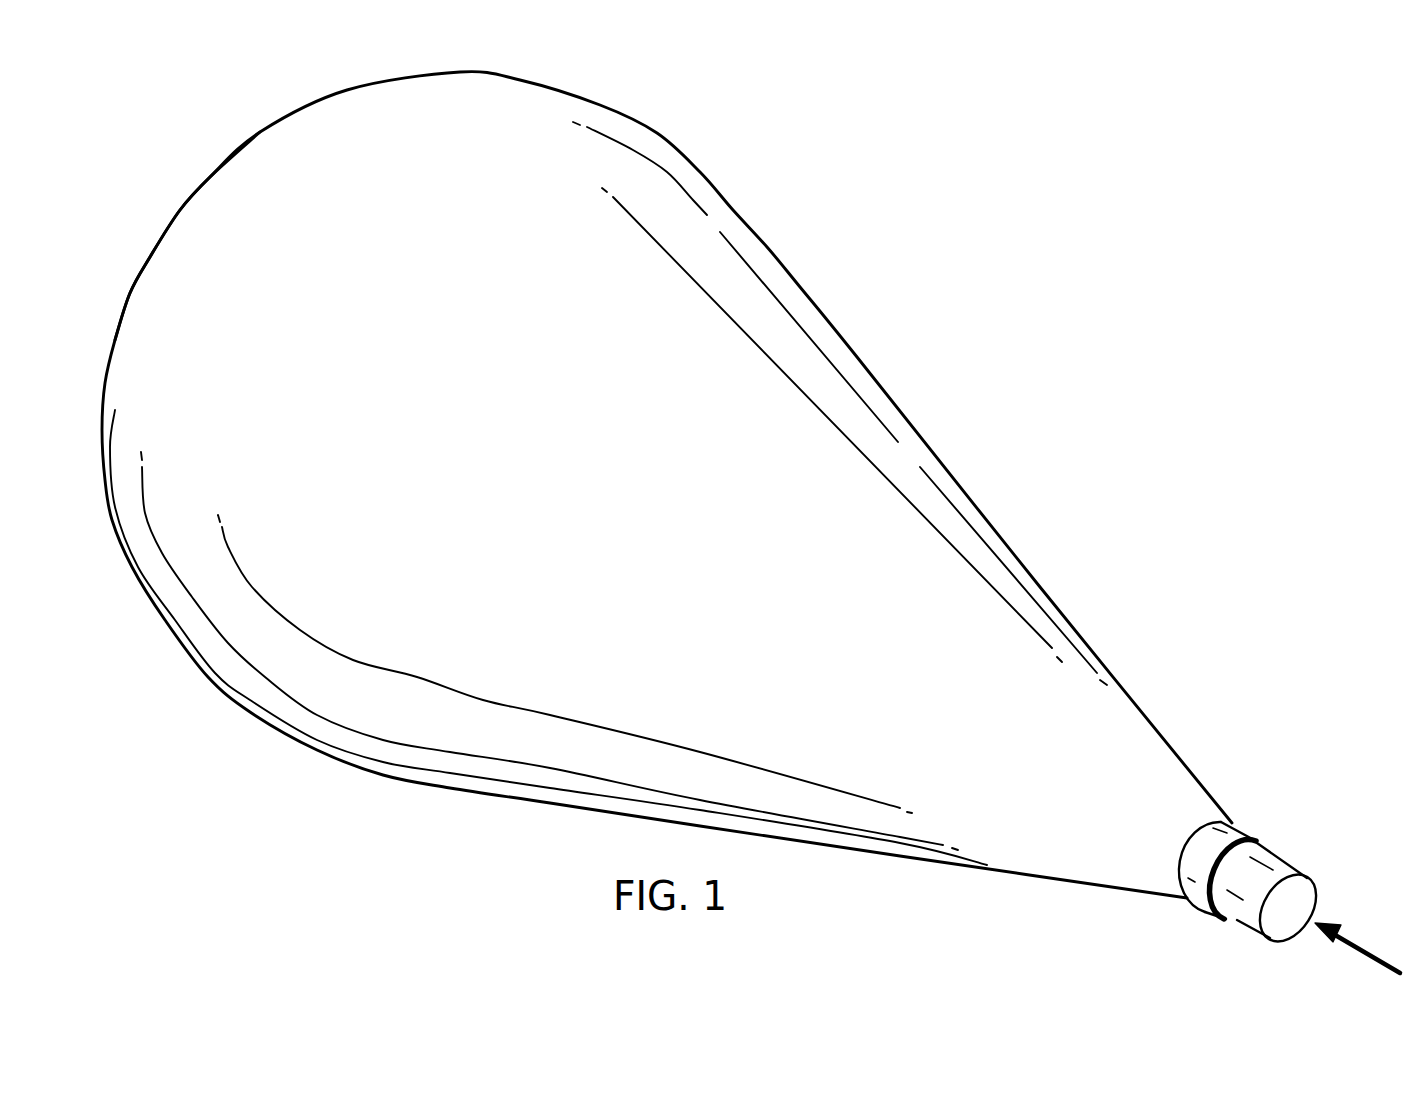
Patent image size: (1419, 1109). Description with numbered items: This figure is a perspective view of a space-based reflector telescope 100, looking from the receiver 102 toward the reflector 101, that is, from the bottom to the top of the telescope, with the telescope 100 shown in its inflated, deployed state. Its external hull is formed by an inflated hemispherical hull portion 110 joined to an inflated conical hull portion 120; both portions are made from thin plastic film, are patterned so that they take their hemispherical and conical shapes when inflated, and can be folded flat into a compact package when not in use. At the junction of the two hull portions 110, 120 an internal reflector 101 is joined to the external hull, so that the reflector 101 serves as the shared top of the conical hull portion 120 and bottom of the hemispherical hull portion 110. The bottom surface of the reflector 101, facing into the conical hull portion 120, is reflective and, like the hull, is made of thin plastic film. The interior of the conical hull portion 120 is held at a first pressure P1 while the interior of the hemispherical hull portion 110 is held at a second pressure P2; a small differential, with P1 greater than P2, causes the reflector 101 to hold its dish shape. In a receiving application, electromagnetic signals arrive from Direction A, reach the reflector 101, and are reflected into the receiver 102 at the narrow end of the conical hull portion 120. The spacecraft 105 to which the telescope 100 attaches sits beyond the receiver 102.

The space-based reflector telescope 100 is at (751, 522).
The hemispherical hull portion 110 is at (262, 132).
The second pressure P2 is at (191, 222).
The first pressure P1 is at (908, 457).
The reflector 101 is at (673, 222).
The conical hull portion 120 is at (565, 805).
The receiver 102 is at (1262, 805).
The spacecraft 105 is at (1287, 862).
The Direction A is at (1357, 948).